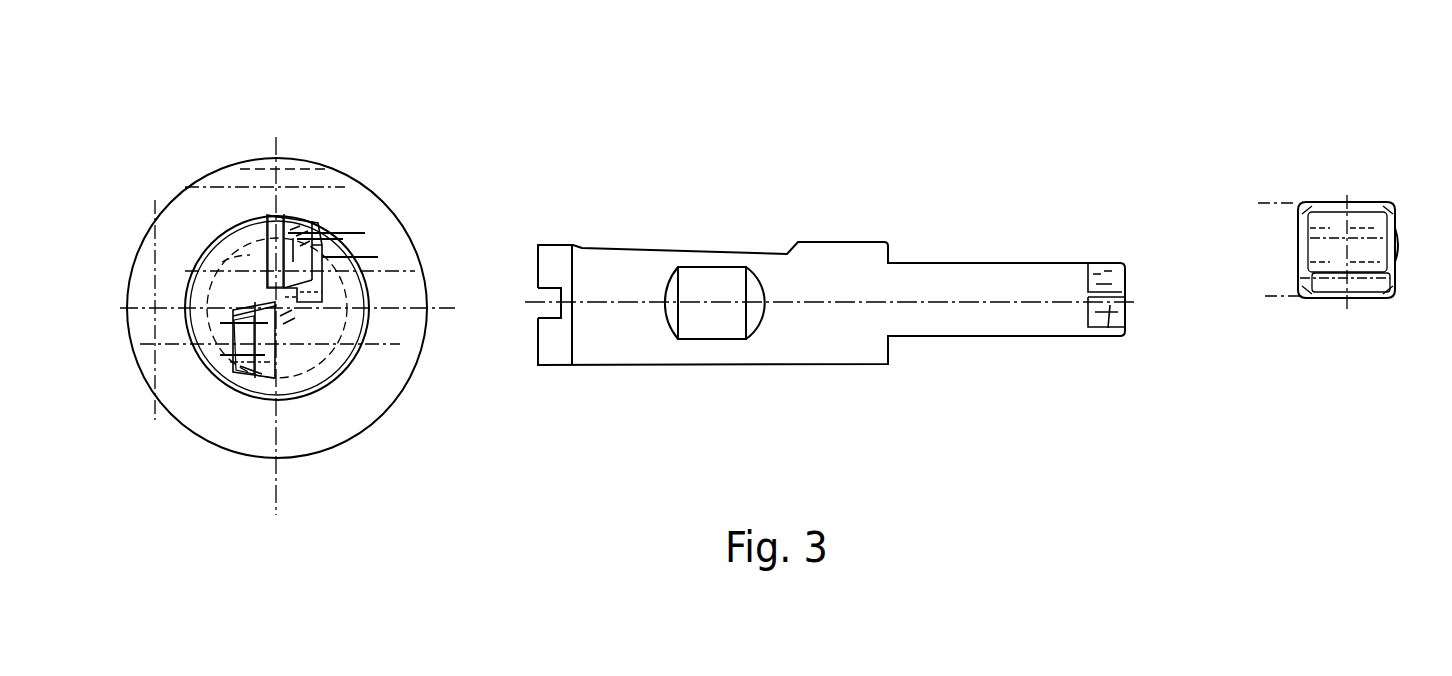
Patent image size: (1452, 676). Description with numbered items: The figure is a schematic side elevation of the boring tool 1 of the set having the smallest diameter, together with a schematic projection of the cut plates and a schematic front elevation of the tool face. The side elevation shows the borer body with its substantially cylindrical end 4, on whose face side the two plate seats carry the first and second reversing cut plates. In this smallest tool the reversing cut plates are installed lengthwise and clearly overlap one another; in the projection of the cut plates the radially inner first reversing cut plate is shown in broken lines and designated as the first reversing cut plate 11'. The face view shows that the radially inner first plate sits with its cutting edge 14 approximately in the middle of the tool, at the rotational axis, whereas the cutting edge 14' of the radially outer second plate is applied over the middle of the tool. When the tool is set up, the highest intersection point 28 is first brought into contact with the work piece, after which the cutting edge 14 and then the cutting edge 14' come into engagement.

The boring tool 1 is at (798, 190).
The cylindrical end 4 is at (932, 313).
The first reversing cut plate (projection) 11' is at (1351, 358).
The cutting edge 14 is at (332, 421).
The cutting edge 14' is at (244, 190).
The highest intersection point 28 is at (1400, 244).